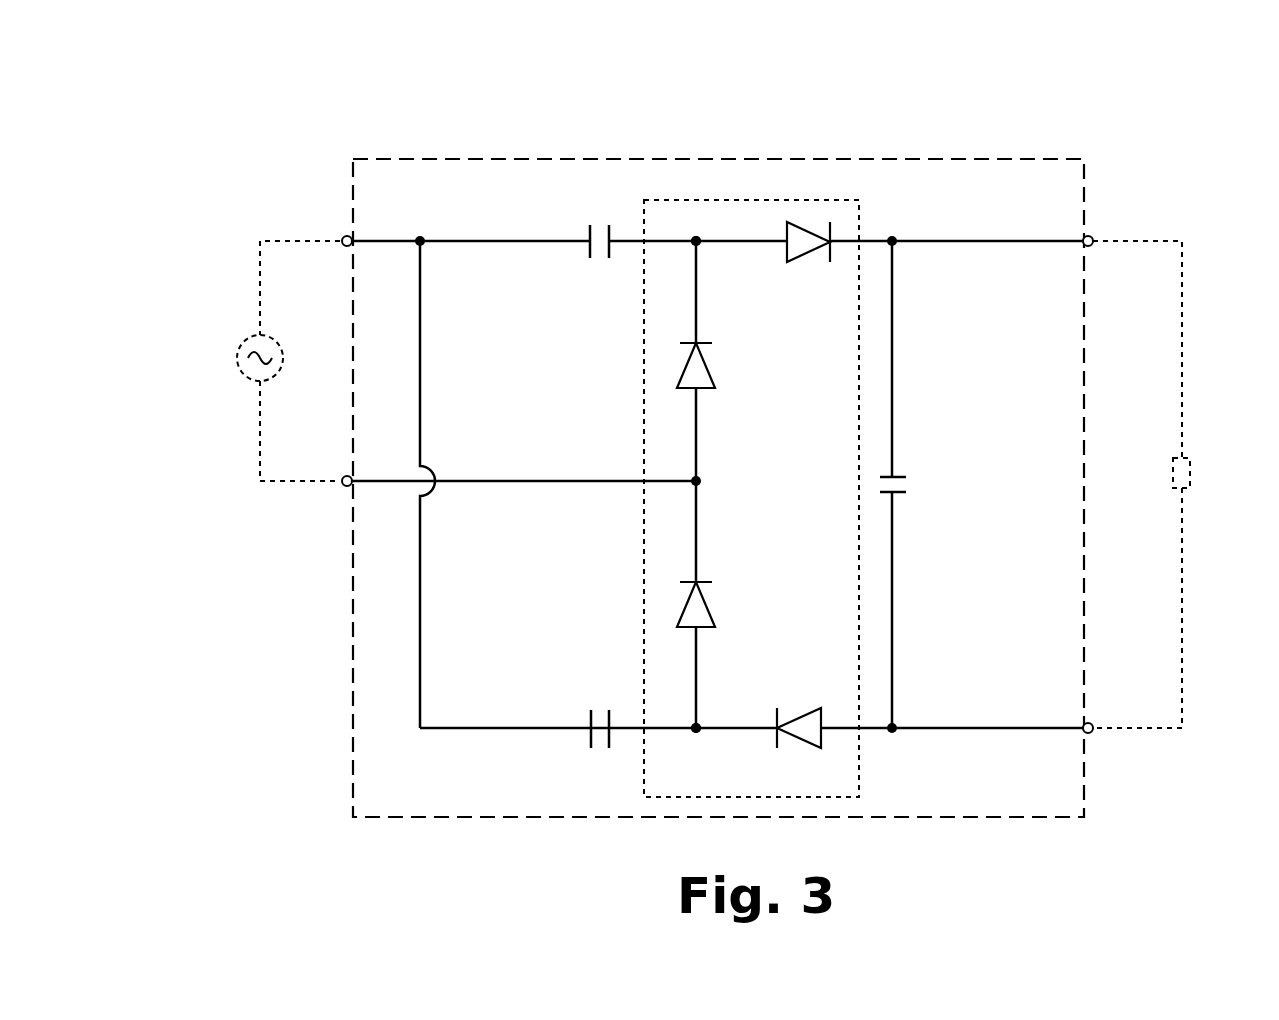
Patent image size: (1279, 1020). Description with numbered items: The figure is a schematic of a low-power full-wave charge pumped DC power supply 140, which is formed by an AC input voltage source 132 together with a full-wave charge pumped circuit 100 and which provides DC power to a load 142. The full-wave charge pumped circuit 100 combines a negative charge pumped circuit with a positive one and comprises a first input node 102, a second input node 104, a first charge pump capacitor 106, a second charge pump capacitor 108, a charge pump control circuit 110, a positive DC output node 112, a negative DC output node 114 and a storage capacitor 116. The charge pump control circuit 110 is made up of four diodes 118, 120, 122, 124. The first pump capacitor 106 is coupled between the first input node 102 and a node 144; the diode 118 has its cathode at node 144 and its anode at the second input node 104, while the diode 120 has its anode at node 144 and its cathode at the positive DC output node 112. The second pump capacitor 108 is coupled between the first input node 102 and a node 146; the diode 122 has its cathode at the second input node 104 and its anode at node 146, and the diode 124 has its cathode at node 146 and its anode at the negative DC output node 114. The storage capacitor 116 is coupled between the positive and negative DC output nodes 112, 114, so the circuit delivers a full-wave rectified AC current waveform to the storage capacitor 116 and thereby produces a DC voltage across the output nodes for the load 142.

The full-wave charge pumped circuit 100 is at (517, 158).
The first input node 102 is at (345, 238).
The second input node 104 is at (344, 486).
The first charge pump capacitor 106 is at (602, 256).
The second charge pump capacitor 108 is at (597, 722).
The charge pump control circuit 110 is at (642, 431).
The positive DC output node 112 is at (1093, 238).
The negative DC output node 114 is at (1093, 733).
The storage capacitor 116 is at (903, 484).
The diode 118 is at (710, 372).
The diode 120 is at (808, 258).
The diode 122 is at (710, 608).
The diode 124 is at (800, 713).
The AC input voltage source 132 is at (238, 361).
The low-power DC power supply 140 is at (275, 90).
The load 142 is at (1192, 465).
The node 144 is at (696, 242).
The node 146 is at (696, 735).